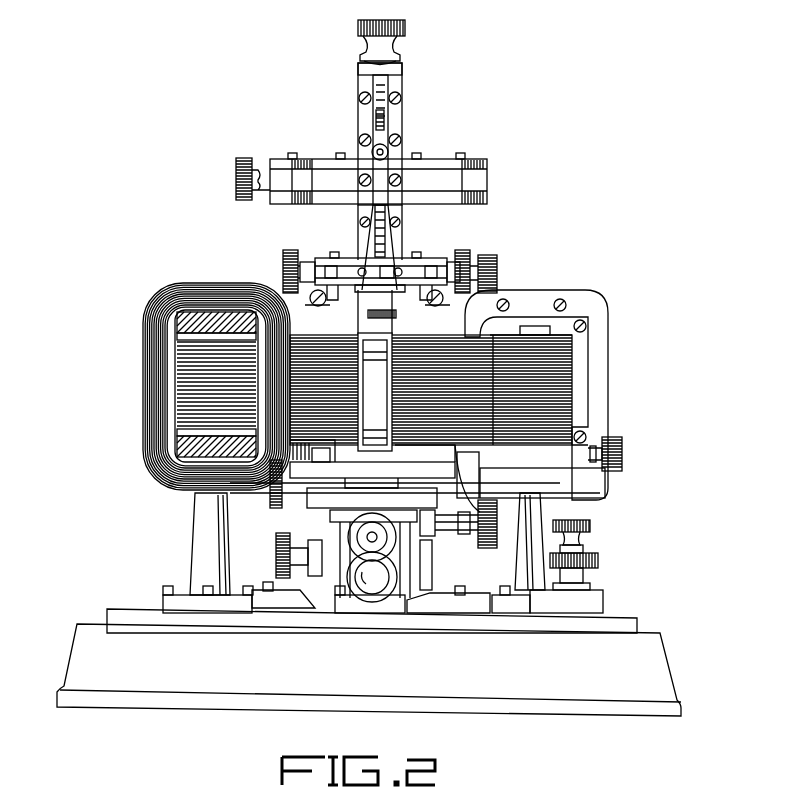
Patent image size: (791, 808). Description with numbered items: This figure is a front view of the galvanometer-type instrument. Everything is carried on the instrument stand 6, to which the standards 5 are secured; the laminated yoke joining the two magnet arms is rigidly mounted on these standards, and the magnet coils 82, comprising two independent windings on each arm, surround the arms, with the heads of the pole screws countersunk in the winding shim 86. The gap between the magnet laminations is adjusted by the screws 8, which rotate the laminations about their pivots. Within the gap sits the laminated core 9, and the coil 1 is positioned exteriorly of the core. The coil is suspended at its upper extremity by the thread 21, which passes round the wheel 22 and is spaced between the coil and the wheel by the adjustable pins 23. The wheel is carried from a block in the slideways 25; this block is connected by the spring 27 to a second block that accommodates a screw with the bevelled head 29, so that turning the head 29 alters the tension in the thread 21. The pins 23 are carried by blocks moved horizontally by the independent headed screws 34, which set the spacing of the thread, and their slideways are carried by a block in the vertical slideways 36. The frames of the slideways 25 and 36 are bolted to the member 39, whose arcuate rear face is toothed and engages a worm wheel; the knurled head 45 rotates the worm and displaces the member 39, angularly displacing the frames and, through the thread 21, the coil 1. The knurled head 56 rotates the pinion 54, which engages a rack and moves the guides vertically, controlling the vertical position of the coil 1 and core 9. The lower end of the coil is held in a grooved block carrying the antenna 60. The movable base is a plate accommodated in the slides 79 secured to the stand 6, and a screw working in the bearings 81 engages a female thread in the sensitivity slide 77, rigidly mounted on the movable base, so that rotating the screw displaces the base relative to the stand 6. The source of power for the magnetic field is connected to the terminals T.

The bevelled head 29 is at (385, 42).
The slideways 25 is at (398, 88).
The spring 27 is at (385, 120).
The wheel 22 is at (389, 148).
The member 39 is at (310, 182).
The knurled head 45 is at (250, 152).
The vertical slideways 36 is at (400, 230).
The thread 21 is at (392, 245).
The adjustable pins 23 is at (352, 270).
The headed screws 34 is at (290, 252).
The knurled head 56 is at (495, 275).
The magnet coils 82 is at (212, 305).
The winding shim 86 is at (143, 448).
The laminated core 9 is at (358, 345).
The pinion 54 is at (308, 312).
The screws 8 is at (622, 453).
The antenna 60 is at (417, 476).
The coil 1 is at (335, 452).
The standards 5 is at (205, 535).
The bearings 81 is at (360, 600).
The sensitivity slide 77 is at (405, 565).
The terminals T is at (572, 533).
The slides 79 is at (445, 632).
The instrument stand 6 is at (162, 615).